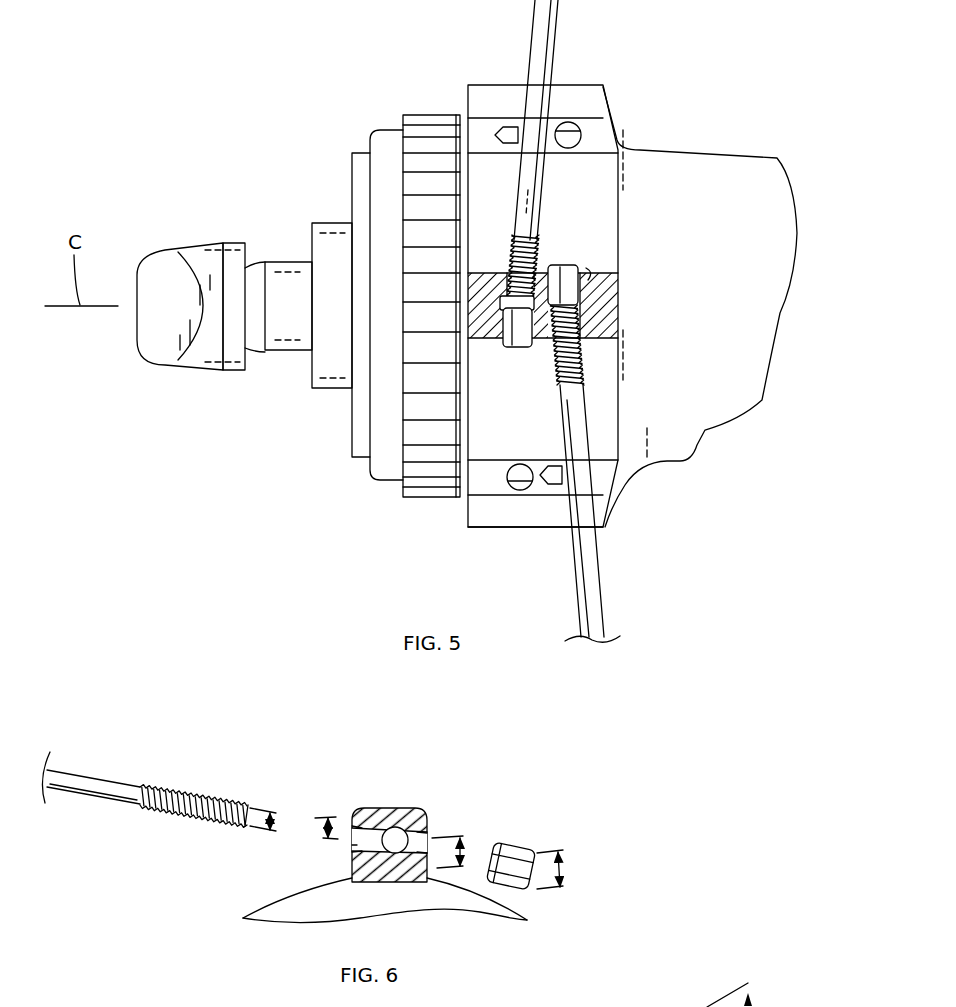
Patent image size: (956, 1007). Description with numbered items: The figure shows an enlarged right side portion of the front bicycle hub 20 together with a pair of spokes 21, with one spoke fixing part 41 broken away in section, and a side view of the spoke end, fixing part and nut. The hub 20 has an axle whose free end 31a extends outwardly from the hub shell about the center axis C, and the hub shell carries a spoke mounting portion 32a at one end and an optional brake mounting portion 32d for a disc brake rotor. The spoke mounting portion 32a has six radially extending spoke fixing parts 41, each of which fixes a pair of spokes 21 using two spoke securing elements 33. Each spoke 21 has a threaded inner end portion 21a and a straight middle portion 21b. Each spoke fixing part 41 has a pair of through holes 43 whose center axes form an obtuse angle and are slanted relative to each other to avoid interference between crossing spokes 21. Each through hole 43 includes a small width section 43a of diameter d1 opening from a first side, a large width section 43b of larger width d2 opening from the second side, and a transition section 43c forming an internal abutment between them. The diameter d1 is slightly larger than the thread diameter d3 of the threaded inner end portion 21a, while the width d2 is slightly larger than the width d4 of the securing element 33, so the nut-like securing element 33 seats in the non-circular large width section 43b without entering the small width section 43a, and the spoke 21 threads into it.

In FIG. 5, the hub 20 is at (747, 142).
In FIG. 6, the hub 20 is at (264, 905).
In FIG. 5, the spoke 21 is at (594, 321).
In FIG. 6, the spoke 21 is at (145, 753).
In FIG. 5, the threaded inner end portion 21a is at (583, 418).
In FIG. 6, the threaded inner end portion 21a is at (194, 777).
In FIG. 6, the middle portion 21b is at (100, 777).
In FIG. 5, the free end 31a is at (285, 352).
In FIG. 5, the spoke mounting portion 32a is at (502, 530).
In FIG. 5, the brake mounting portion 32d is at (421, 502).
In FIG. 5, the spoke securing element 33 is at (561, 264).
In FIG. 6, the spoke securing element 33 is at (526, 836).
In FIG. 5, the spoke fixing part 41 is at (592, 304).
In FIG. 6, the spoke fixing part 41 is at (394, 828).
In FIG. 5, the through hole 43 is at (500, 153).
In FIG. 6, the through hole 43 is at (349, 845).
In FIG. 5, the small width section 43a is at (588, 280).
In FIG. 6, the small width section 43a is at (352, 830).
In FIG. 5, the large width section 43b is at (582, 268).
In FIG. 6, the large width section 43b is at (427, 842).
In FIG. 5, the transition section 43c is at (603, 320).
In FIG. 6, the transition section 43c is at (393, 812).
In FIG. 6, the diameter of small width section d1 is at (318, 830).
In FIG. 6, the width of large width section d2 is at (465, 858).
In FIG. 6, the thread diameter d3 is at (276, 821).
In FIG. 6, the width of securing element d4 is at (565, 877).